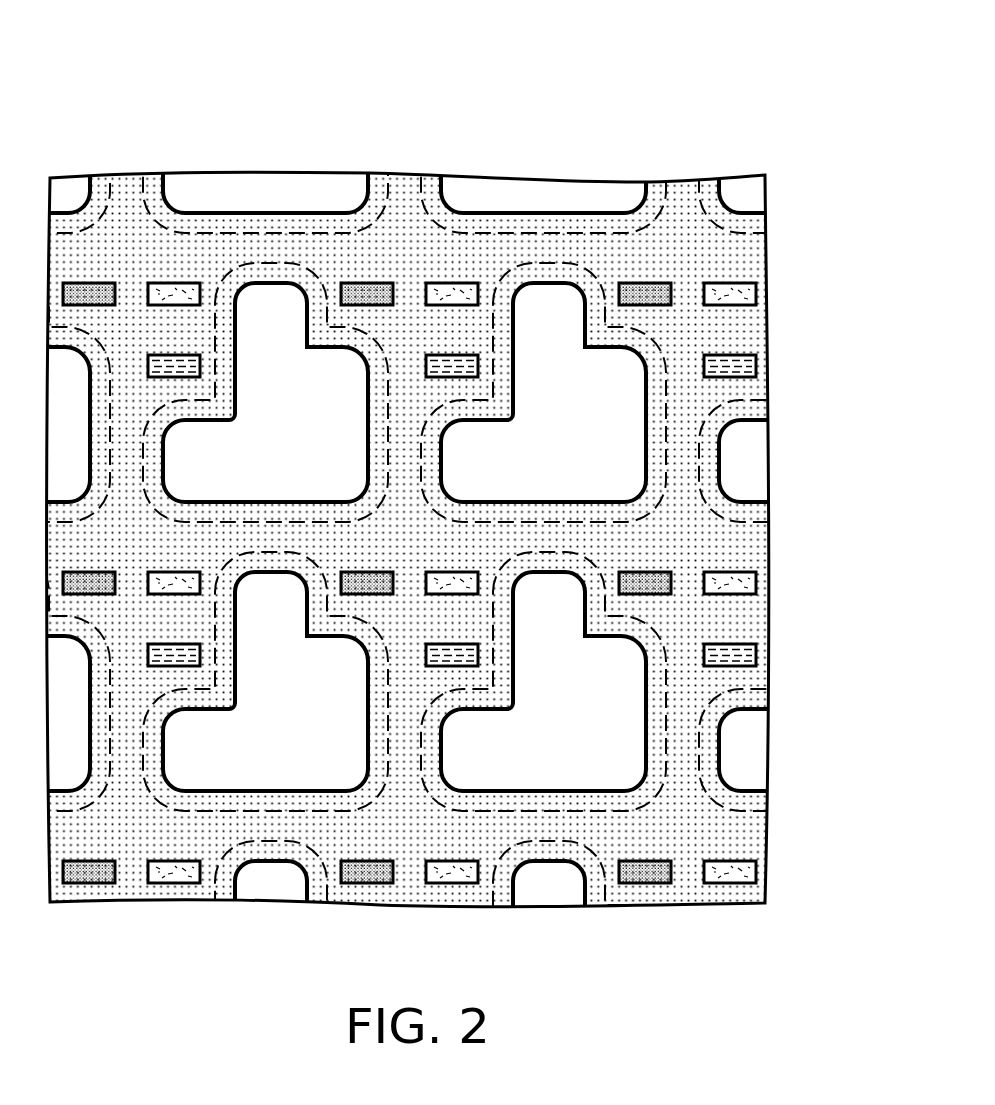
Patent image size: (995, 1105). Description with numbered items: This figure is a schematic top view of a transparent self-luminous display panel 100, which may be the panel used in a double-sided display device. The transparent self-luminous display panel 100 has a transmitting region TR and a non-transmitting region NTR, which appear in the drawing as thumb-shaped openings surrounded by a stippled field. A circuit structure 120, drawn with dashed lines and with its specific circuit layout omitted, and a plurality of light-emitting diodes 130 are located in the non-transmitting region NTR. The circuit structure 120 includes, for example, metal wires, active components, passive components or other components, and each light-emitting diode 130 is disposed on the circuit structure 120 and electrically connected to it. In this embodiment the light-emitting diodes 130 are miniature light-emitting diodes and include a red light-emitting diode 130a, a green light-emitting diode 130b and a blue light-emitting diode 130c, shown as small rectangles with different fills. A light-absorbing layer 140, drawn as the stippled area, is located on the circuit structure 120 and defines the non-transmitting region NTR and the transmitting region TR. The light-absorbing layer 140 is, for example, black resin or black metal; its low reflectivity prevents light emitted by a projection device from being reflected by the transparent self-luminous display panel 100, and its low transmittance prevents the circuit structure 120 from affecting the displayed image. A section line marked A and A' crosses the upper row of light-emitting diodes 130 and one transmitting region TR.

The transparent self-luminous display panel 100 is at (472, 550).
The circuit structure 120 is at (707, 507).
The light-emitting diodes 130 is at (466, 194).
The red light-emitting diode 130a is at (378, 293).
The green light-emitting diode 130b is at (455, 293).
The blue light-emitting diode 130c is at (477, 363).
The light-absorbing layer 140 is at (740, 548).
The transmitting region TR is at (558, 312).
The non-transmitting region NTR is at (683, 257).
The section line end A is at (227, 202).
The section line end A' is at (332, 202).